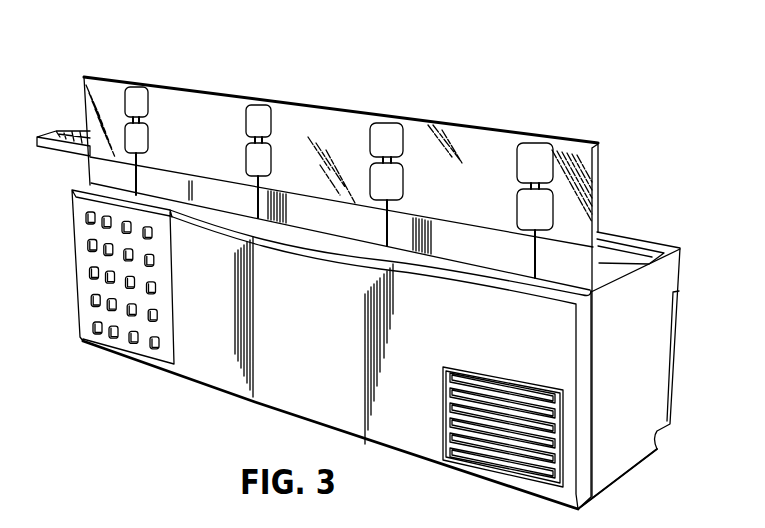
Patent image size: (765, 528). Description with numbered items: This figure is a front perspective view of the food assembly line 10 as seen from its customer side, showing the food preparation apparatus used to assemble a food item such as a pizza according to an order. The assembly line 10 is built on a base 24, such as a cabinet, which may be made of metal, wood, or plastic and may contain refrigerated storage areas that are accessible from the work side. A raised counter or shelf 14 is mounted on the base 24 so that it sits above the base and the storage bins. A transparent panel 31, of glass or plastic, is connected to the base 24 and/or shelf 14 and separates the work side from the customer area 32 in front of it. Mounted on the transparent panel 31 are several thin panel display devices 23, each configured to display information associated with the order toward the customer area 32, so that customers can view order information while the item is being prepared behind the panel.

The food assembly line 10 is at (528, 65).
The shelf 14 is at (49, 150).
The display device 23 is at (118, 100).
The base 24 is at (640, 362).
The transparent panel 31 is at (598, 188).
The customer area 32 is at (228, 426).